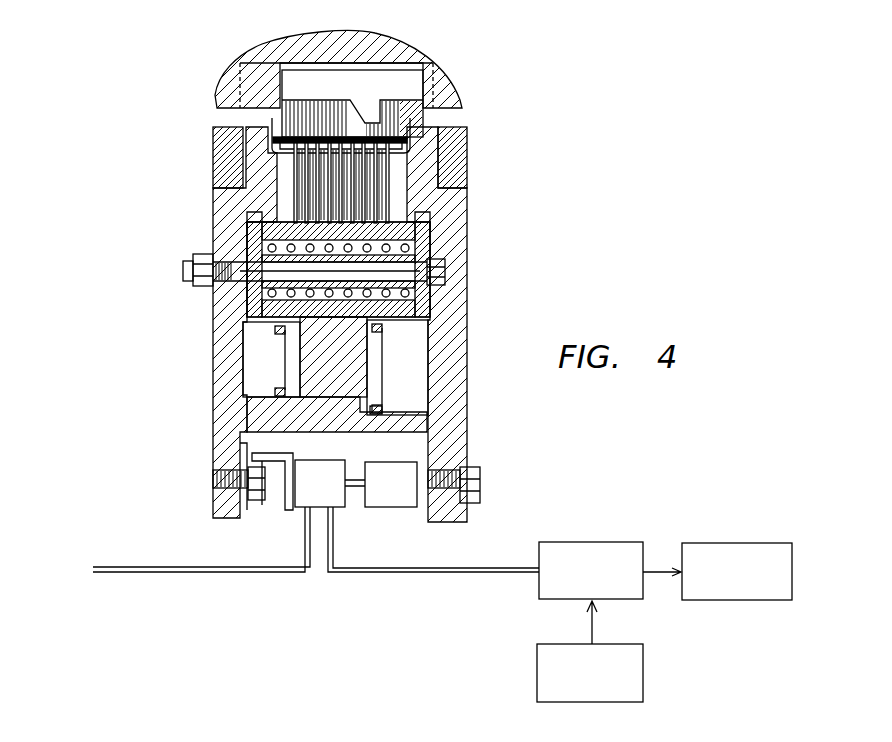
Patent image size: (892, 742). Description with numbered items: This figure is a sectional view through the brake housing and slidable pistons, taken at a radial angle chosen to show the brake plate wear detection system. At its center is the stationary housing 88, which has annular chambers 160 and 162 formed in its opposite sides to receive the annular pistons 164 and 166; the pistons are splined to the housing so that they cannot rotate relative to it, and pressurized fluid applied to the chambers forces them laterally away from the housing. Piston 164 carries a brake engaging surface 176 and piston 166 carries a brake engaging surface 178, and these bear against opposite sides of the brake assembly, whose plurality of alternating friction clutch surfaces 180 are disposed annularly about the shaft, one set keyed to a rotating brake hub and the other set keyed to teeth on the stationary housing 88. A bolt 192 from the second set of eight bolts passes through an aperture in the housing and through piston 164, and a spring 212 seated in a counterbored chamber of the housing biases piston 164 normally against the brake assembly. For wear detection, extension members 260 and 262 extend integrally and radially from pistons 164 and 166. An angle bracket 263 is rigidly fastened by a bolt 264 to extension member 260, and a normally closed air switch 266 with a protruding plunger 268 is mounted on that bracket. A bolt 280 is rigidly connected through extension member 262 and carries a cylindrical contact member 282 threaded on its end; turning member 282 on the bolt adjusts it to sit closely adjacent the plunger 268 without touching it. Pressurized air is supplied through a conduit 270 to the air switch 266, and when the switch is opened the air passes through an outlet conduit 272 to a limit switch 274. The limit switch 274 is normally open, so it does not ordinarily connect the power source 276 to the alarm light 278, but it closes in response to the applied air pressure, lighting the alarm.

The brake engaging surface 176 is at (275, 185).
The brake engaging surface 178 is at (445, 160).
The friction clutch surfaces 180 is at (362, 186).
The spring 212 is at (390, 241).
The bolts 192 is at (430, 270).
The annular piston 164 is at (290, 371).
The stationary housing 88 is at (344, 383).
The annular piston 166 is at (425, 371).
The annular chamber 160 is at (297, 417).
The annular chamber 162 is at (370, 420).
The extension member 260 is at (218, 453).
The extension member 262 is at (460, 448).
The bolt 264 is at (213, 497).
The angle bracket 263 is at (273, 455).
The air switch 266 is at (340, 495).
The cylindrical contact member 282 is at (410, 495).
The plunger 268 is at (355, 488).
The bolt 280 is at (474, 488).
The conduit 270 is at (188, 571).
The outlet conduit 272 is at (462, 568).
The limit switch 274 is at (620, 562).
The alarm light 278 is at (782, 567).
The power source 276 is at (635, 673).